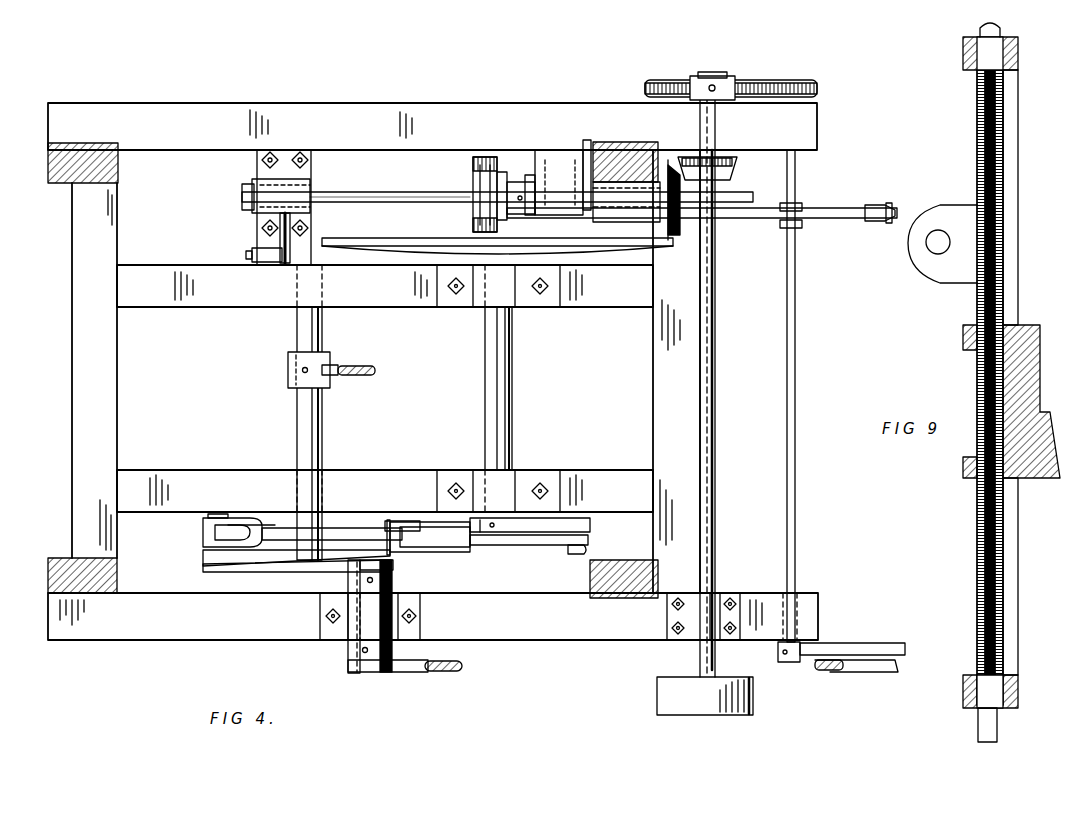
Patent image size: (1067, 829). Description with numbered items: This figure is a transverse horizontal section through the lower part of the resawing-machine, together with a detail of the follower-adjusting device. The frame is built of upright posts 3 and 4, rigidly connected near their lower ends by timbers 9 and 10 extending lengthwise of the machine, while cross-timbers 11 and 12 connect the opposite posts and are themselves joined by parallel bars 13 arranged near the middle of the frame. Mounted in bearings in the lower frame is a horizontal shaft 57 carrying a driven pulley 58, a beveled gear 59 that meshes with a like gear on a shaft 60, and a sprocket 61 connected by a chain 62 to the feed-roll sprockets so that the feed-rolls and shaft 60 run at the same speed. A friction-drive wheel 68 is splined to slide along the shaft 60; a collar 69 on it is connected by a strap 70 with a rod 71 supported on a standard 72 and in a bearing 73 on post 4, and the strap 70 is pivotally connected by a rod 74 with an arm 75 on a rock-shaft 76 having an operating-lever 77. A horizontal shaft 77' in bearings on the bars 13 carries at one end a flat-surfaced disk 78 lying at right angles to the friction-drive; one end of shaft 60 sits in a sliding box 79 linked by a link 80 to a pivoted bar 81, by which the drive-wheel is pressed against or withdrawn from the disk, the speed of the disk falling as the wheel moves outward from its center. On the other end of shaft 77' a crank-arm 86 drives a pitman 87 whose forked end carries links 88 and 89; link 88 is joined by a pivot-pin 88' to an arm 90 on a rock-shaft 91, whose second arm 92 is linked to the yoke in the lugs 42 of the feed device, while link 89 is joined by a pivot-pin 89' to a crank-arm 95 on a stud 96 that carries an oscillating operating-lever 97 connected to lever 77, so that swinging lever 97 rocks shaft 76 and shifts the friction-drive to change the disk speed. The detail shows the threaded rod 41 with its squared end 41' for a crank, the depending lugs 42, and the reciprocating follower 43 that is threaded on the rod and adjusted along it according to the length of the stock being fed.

In FIG. 4, the upright post 3 is at (62, 182).
In FIG. 4, the upright post 4 is at (603, 147).
In FIG. 4, the timber 9 is at (160, 578).
In FIG. 4, the timber 10 is at (190, 152).
In FIG. 4, the cross-timber 11 is at (108, 371).
In FIG. 4, the cross-timber 12 is at (660, 380).
In FIG. 4, the parallel bars 13 is at (247, 303).
In FIG. 9, the threaded rod 41 is at (975, 364).
In FIG. 9, the squared end 41' is at (979, 708).
In FIG. 9, the lugs 42 is at (950, 272).
In FIG. 9, the reciprocating follower 43 is at (1048, 478).
In FIG. 4, the horizontal shaft 57 is at (718, 358).
In FIG. 4, the driven pulley 58 is at (760, 692).
In FIG. 4, the beveled gear 59 is at (735, 170).
In FIG. 4, the shaft 60 is at (412, 192).
In FIG. 4, the sprocket 61 is at (728, 80).
In FIG. 4, the chain 62 is at (814, 90).
In FIG. 4, the friction-drive wheel 68 is at (489, 156).
In FIG. 4, the collar 69 is at (512, 175).
In FIG. 4, the strap 70 is at (530, 188).
In FIG. 4, the rod 71 is at (354, 192).
In FIG. 4, the standard 72 is at (242, 200).
In FIG. 4, the bearing 73 is at (586, 140).
In FIG. 4, the rod 74 is at (746, 220).
In FIG. 4, the arm 75 is at (896, 198).
In FIG. 4, the rock-shaft 76 is at (797, 288).
In FIG. 4, the operating-lever 77 is at (841, 647).
In FIG. 4, the horizontal shaft 77' is at (517, 388).
In FIG. 4, the flat-surfaced disk 78 is at (362, 238).
In FIG. 4, the sliding box 79 is at (256, 168).
In FIG. 4, the link 80 is at (268, 240).
In FIG. 4, the bar 81 is at (252, 256).
In FIG. 4, the crank-arm 86 is at (590, 526).
In FIG. 4, the pitman 87 is at (508, 546).
In FIG. 4, the link 88 is at (341, 513).
In FIG. 4, the pivot-pin 88' is at (231, 509).
In FIG. 4, the link 89 is at (428, 546).
In FIG. 4, the pivot-pin 89' is at (281, 577).
In FIG. 4, the arm 90 is at (204, 536).
In FIG. 4, the rock-shaft 91 is at (322, 446).
In FIG. 4, the arm 92 is at (352, 378).
In FIG. 4, the crank-arm 95 is at (252, 568).
In FIG. 4, the stud 96 is at (340, 648).
In FIG. 4, the oscillating operating-lever 97 is at (434, 670).